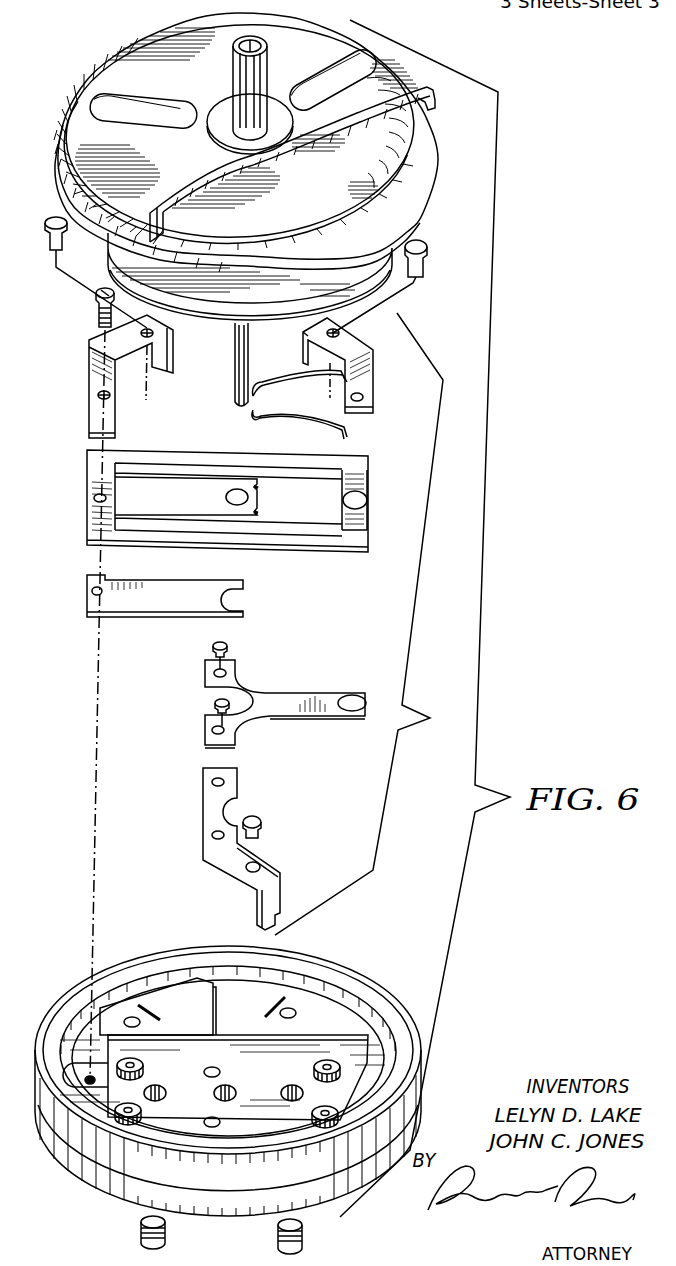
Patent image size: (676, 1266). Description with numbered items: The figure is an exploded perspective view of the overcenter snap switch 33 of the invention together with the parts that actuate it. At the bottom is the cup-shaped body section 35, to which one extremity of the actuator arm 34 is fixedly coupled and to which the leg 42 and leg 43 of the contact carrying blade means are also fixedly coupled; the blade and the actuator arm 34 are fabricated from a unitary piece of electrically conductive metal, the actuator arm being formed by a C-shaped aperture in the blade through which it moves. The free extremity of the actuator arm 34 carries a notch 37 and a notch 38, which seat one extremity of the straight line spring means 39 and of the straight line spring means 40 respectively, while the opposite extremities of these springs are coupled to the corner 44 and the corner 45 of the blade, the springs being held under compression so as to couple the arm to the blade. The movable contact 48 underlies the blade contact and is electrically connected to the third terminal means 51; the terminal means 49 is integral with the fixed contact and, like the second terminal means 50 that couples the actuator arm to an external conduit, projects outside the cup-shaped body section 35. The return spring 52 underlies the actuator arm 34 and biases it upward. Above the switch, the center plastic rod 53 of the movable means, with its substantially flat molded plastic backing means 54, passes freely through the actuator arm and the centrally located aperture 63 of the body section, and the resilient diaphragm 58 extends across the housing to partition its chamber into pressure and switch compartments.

The overcenter snap switch 33 is at (392, 618).
The actuator arm 34 is at (181, 507).
The cup-shaped body section 35 is at (175, 1031).
The notch 37 is at (258, 488).
The notch 38 is at (258, 514).
The straight line spring means 39 is at (288, 375).
The straight line spring means 40 is at (297, 413).
The leg 42 is at (248, 501).
The leg 43 is at (283, 543).
The corner 44 is at (343, 472).
The corner 45 is at (343, 530).
The movable contact 48 is at (293, 697).
The terminal means 49 is at (370, 368).
The second terminal means 50 is at (95, 362).
The third terminal means 51 is at (267, 867).
The return spring 52 is at (175, 607).
The center plastic rod 53 is at (240, 372).
The molded plastic backing means 54 is at (301, 307).
The resilient diaphragm 58 is at (277, 212).
The centrally located aperture 63 is at (256, 44).